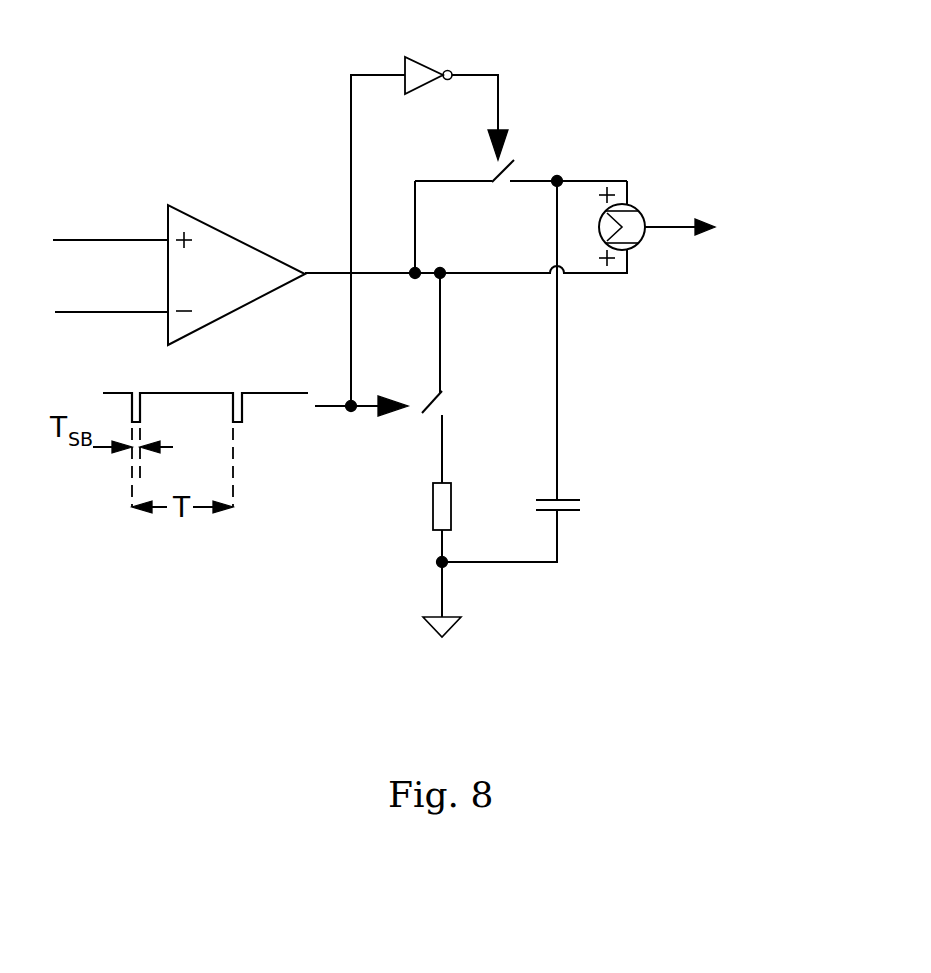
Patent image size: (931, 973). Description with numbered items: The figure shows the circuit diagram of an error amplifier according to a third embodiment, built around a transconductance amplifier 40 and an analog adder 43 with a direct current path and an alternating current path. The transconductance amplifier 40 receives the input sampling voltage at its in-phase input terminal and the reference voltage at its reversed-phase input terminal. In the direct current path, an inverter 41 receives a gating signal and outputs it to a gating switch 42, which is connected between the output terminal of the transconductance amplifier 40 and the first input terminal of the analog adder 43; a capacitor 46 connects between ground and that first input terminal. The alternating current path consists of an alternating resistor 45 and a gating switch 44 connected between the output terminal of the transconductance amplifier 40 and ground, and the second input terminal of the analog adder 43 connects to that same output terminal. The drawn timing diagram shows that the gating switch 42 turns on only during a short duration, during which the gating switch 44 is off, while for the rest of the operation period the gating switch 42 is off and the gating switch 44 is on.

The transconductance amplifier 40 is at (157, 203).
The inverter 41 is at (403, 57).
The gating switch 42 is at (525, 165).
The analog adder 43 is at (647, 202).
The gating switch 44 is at (427, 392).
The alternating resistor 45 is at (425, 508).
The capacitor 46 is at (537, 500).